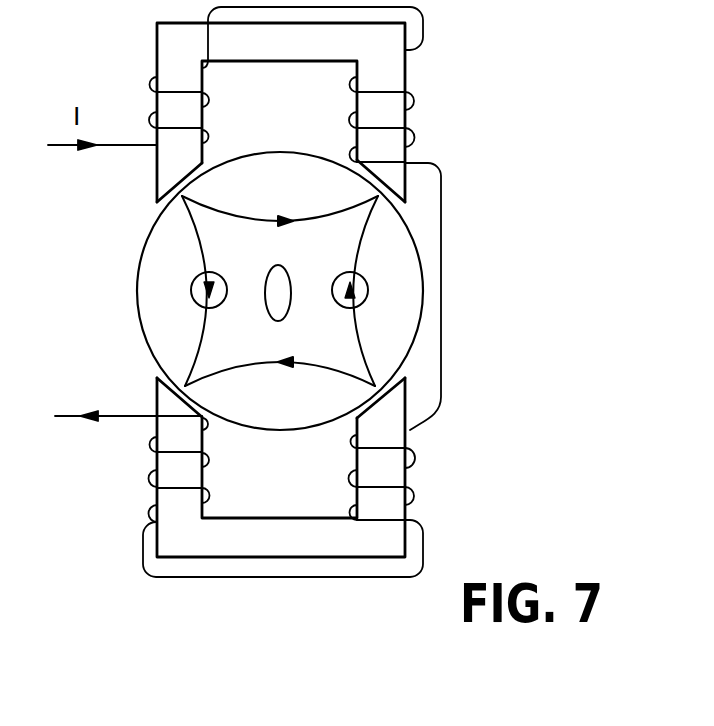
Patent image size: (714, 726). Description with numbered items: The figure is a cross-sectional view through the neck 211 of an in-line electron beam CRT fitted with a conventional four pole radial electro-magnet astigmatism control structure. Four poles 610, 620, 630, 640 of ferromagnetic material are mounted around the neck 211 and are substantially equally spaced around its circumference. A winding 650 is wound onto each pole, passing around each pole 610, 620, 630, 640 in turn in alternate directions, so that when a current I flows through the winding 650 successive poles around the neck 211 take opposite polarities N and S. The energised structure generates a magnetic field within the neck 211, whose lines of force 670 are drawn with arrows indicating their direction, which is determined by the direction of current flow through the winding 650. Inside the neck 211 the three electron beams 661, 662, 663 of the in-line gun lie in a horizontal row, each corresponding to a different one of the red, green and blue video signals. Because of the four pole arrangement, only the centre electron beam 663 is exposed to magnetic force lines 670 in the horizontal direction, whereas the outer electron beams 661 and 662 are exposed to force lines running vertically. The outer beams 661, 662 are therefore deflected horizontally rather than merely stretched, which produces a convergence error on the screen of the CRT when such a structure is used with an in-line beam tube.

The neck 211 is at (140, 257).
The pole 610 is at (157, 158).
The pole 620 is at (405, 183).
The pole 630 is at (410, 405).
The pole 640 is at (157, 403).
The winding 650 is at (268, 578).
The outer electron beam 661 is at (368, 292).
The outer electron beam 662 is at (192, 292).
The centre electron beam 663 is at (292, 313).
The lines of force 670 is at (357, 240).